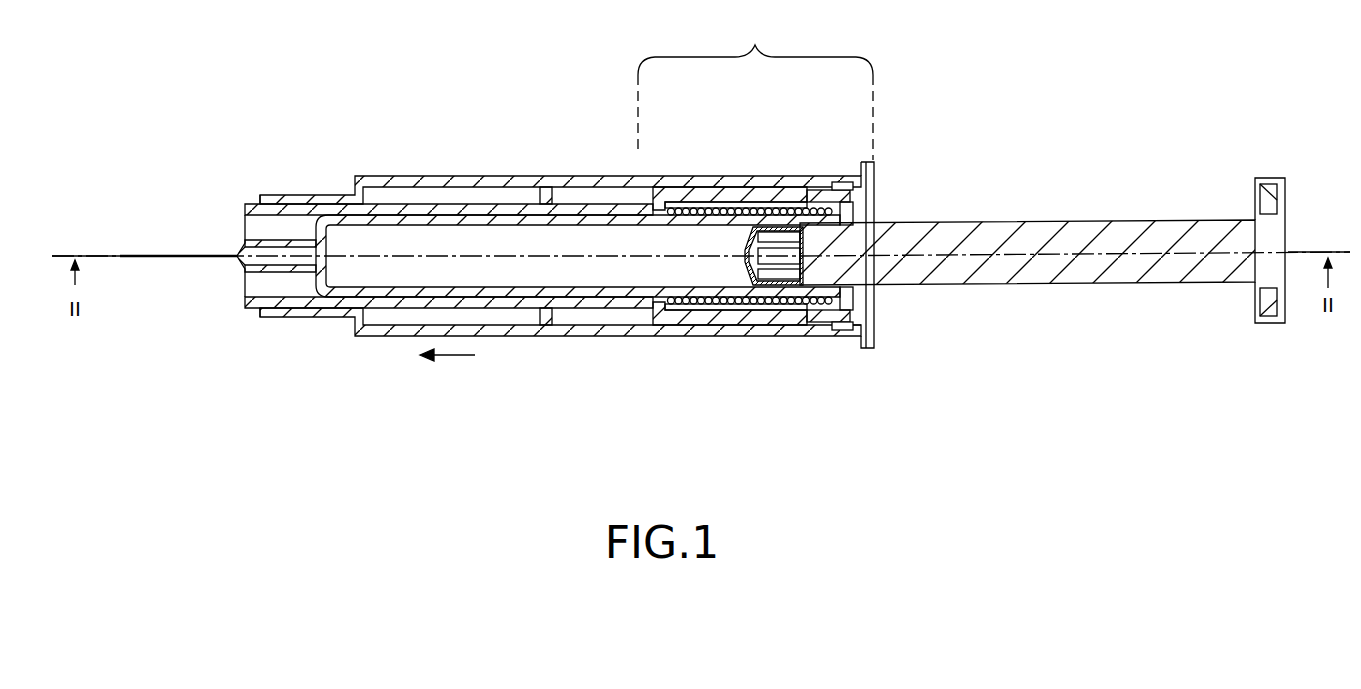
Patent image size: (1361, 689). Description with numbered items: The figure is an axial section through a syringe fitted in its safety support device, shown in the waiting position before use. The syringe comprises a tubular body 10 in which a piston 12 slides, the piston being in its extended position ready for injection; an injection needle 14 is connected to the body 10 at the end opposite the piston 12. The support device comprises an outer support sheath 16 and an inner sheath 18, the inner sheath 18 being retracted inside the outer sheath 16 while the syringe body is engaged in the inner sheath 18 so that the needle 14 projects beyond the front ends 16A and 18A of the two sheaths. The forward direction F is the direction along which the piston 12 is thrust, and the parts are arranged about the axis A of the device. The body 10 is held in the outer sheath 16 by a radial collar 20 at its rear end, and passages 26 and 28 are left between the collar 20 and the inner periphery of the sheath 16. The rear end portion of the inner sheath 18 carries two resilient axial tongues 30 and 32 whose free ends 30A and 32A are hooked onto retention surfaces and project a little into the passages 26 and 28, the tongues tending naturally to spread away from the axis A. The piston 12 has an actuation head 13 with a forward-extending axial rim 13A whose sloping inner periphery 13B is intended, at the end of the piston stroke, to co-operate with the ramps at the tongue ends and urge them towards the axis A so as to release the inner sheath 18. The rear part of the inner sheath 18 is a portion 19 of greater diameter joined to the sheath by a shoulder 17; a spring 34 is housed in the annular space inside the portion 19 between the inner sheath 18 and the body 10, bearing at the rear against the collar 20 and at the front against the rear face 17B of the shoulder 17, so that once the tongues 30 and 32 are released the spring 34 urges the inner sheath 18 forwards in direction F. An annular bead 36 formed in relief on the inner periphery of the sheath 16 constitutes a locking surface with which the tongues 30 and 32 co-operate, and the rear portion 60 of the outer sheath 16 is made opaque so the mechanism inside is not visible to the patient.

The body 10 is at (455, 223).
The piston 12 is at (1030, 226).
The actuation head 13 is at (1288, 226).
The axial rim 13A is at (1276, 178).
The inner periphery 13B is at (1253, 206).
The injection needle 14 is at (175, 252).
The outer support sheath 16 is at (592, 178).
The front end of outer sheath 16A is at (262, 312).
The shoulder 17 is at (647, 326).
The rear face of shoulder 17B is at (692, 176).
The inner sheath 18 is at (515, 210).
The front end of inner sheath 18A is at (245, 297).
The portion of greater diameter 19 is at (730, 177).
The radial collar 20 is at (878, 298).
The passage 26 is at (876, 180).
The passage 28 is at (880, 322).
The axial tongue 30 is at (796, 177).
The free end of tongue 30A is at (848, 177).
The axial tongue 32 is at (787, 322).
The free end of tongue 32A is at (818, 330).
The spring 34 is at (716, 325).
The annular bead 36 is at (554, 336).
The rear portion of support sheath 60 is at (755, 55).
The axis A is at (385, 255).
The forward direction F is at (447, 367).